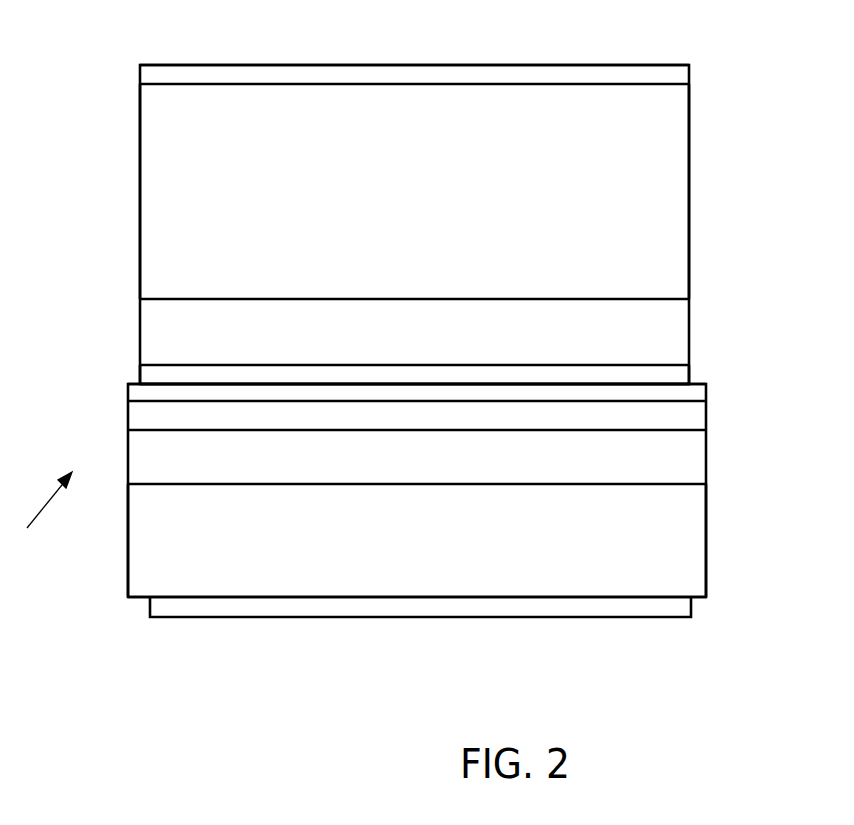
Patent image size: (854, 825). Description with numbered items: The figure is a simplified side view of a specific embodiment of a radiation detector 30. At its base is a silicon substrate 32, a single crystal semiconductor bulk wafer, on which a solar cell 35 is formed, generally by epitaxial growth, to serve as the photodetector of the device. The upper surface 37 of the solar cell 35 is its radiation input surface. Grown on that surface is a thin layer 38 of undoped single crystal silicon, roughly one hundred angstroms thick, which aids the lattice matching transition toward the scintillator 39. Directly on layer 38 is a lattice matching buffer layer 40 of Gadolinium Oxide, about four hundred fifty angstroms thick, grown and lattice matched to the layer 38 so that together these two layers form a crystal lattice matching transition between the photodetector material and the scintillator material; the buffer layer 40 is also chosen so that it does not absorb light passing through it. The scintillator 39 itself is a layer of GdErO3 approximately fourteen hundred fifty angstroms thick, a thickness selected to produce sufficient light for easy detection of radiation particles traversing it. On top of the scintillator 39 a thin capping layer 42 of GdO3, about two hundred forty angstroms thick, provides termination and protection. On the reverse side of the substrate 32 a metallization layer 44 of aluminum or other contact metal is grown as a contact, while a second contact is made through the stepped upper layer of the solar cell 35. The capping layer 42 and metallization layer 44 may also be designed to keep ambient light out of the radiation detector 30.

The radiation detector 30 is at (786, 458).
The silicon substrate 32 is at (688, 536).
The solar cell 35 is at (108, 487).
The upper surface 37 is at (152, 389).
The thin layer of undoped single crystal silicon 38 is at (138, 372).
The scintillator 39 is at (680, 156).
The lattice matching buffer layer 40 is at (153, 321).
The capping layer 42 is at (675, 73).
The metallization layer 44 is at (162, 611).